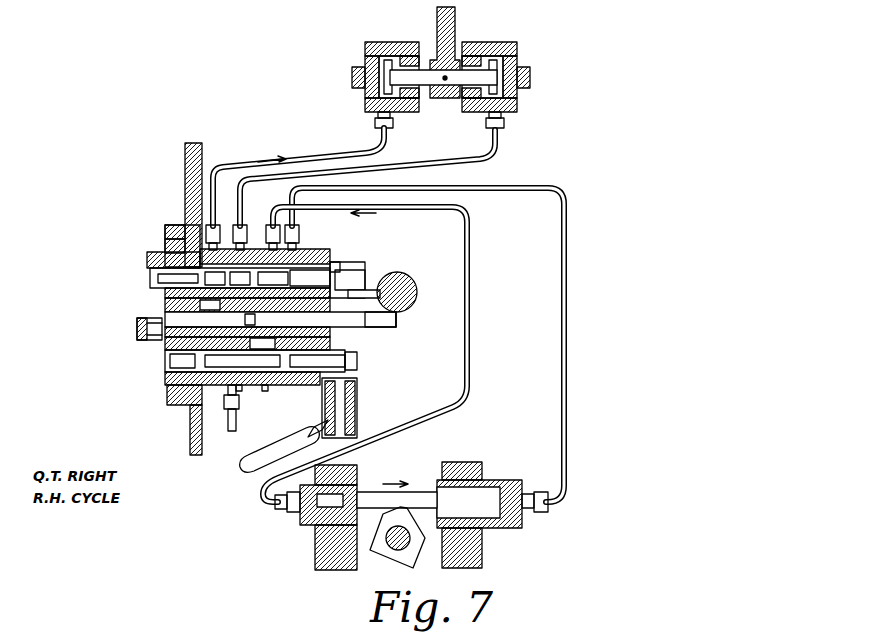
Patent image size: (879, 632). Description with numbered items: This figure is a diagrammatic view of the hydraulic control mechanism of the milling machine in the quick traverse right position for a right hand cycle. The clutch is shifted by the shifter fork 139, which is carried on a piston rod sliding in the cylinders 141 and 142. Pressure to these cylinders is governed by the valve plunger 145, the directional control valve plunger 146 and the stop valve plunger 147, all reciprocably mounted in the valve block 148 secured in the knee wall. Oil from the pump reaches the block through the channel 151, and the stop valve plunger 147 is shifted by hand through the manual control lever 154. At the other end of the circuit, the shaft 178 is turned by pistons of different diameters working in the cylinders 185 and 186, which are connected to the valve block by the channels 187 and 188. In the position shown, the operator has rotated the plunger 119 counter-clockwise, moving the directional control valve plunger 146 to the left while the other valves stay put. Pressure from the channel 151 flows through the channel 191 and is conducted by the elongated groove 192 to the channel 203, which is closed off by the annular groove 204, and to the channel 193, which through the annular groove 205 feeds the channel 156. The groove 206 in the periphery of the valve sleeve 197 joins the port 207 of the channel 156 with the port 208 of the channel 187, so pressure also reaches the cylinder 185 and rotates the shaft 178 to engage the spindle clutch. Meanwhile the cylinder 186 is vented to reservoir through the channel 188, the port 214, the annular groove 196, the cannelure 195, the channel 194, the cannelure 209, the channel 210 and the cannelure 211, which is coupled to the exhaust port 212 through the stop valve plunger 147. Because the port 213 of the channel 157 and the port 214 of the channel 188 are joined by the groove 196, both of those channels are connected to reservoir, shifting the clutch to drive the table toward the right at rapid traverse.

The plunger 119 is at (410, 289).
The shifter fork 139 is at (457, 29).
The cylinder 141 is at (366, 51).
The cylinder 142 is at (519, 50).
The valve plunger 145 is at (166, 283).
The directional control valve plunger 146 is at (170, 350).
The stop valve plunger 147 is at (168, 394).
The valve block 148 is at (172, 228).
The channel 151 is at (238, 430).
The manual control lever 154 is at (244, 463).
The channel 156 is at (312, 167).
The channel 157 is at (440, 163).
The shaft 178 is at (398, 551).
The cylinder 185 is at (307, 523).
The cylinder 186 is at (489, 482).
The channel 187 is at (471, 283).
The channel 188 is at (569, 322).
The channel 191 is at (190, 408).
The elongated groove 192 is at (170, 365).
The channel 193 is at (170, 378).
The channel 194 is at (333, 255).
The cannelure 195 is at (268, 246).
The annular groove 196 is at (337, 259).
The valve sleeve 197 is at (148, 262).
The channel 203 is at (166, 303).
The annular groove 204 is at (166, 251).
The annular groove 205 is at (166, 237).
The groove 206 is at (220, 230).
The port 207 is at (186, 232).
The port 208 is at (229, 240).
The cannelure 209 is at (268, 321).
The channel 210 is at (306, 321).
The cannelure 211 is at (245, 386).
The exhaust port 212 is at (265, 386).
The port 213 is at (298, 246).
The port 214 is at (303, 251).